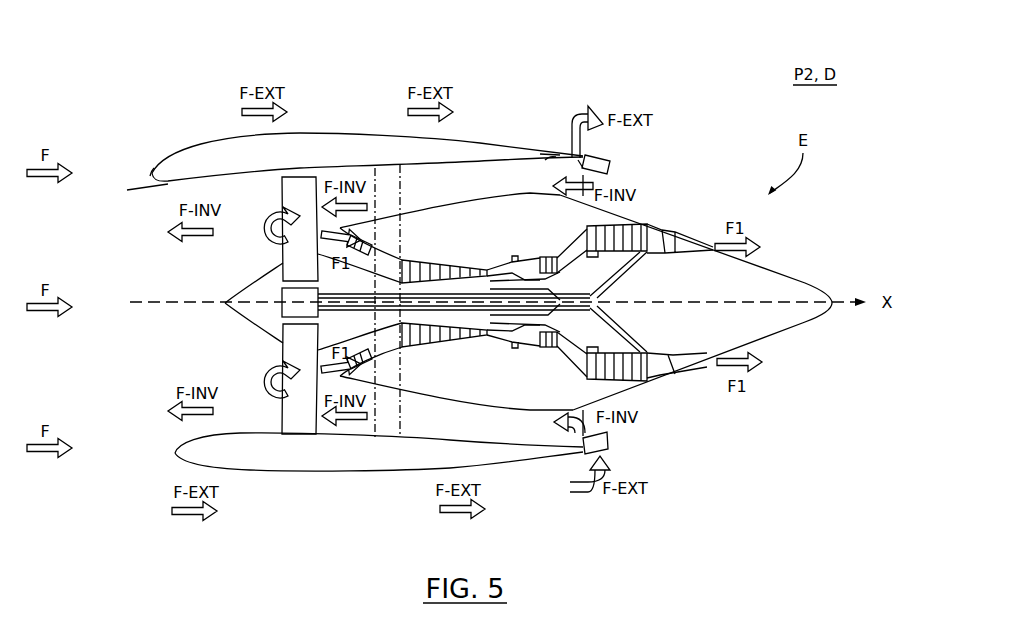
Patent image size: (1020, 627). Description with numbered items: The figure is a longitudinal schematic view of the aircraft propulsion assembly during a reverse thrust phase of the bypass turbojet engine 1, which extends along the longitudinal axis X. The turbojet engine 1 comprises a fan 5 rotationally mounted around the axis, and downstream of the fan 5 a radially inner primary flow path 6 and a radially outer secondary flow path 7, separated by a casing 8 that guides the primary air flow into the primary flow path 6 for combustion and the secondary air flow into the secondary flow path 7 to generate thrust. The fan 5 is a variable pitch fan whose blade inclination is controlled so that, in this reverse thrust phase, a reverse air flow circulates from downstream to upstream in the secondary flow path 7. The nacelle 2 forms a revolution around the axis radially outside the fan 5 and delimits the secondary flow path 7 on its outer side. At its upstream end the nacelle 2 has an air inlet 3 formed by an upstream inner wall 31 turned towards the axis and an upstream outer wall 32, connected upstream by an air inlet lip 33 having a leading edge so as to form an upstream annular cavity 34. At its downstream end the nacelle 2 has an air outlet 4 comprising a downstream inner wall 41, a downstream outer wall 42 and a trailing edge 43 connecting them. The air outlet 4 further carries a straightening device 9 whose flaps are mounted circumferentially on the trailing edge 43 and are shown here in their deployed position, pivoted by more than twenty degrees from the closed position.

The bypass turbojet engine 1 is at (721, 203).
The nacelle 2 is at (274, 473).
The air inlet 3 is at (93, 127).
The upstream inner wall 31 is at (349, 189).
The upstream outer wall 32 is at (165, 156).
The air inlet lip 33 is at (152, 177).
The upstream annular cavity 34 is at (190, 181).
The air outlet 4 is at (518, 63).
The downstream inner wall 41 is at (552, 158).
The downstream outer wall 42 is at (551, 153).
The trailing edge 43 is at (582, 157).
The fan 5 is at (296, 440).
The primary flow path 6 is at (413, 337).
The secondary flow path 7 is at (484, 434).
The casing 8 is at (482, 381).
The straightening device 9 is at (614, 161).